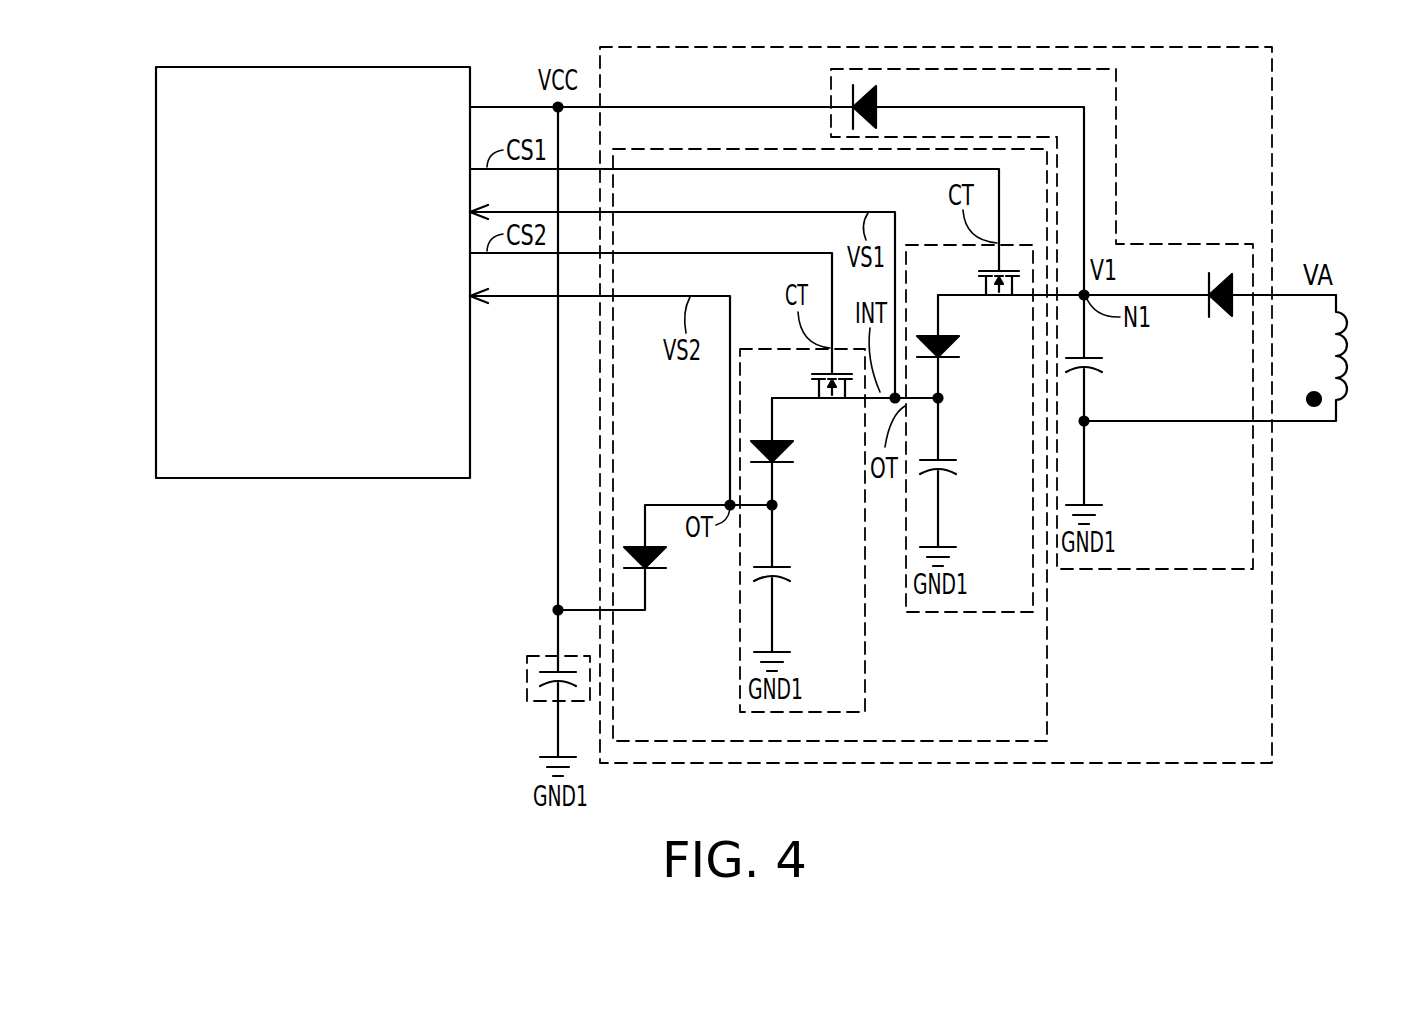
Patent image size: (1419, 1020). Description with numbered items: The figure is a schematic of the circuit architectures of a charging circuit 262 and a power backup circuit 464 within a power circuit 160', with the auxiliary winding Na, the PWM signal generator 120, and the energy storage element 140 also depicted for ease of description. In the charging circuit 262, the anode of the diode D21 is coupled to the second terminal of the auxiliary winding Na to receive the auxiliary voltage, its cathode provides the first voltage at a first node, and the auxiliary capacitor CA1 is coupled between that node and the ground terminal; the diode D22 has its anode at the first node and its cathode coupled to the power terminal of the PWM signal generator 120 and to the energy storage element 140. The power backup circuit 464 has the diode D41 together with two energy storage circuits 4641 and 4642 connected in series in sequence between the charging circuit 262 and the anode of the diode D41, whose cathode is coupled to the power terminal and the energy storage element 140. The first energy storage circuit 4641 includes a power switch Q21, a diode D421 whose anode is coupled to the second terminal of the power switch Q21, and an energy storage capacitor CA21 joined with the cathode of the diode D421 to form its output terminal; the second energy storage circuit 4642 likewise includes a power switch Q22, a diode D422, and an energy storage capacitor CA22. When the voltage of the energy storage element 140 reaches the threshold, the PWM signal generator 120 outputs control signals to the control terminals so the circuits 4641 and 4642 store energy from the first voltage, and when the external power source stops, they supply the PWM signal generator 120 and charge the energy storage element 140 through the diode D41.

The PWM signal generator 120 is at (314, 478).
The energy storage element 140 is at (526, 680).
The power circuit 160' is at (991, 442).
The charging circuit 262 is at (1155, 571).
The power backup circuit 464 is at (1047, 716).
The first energy storage circuit 4641 is at (985, 613).
The second energy storage circuit 4642 is at (865, 683).
The diode D41 is at (668, 556).
The diode D22 is at (878, 92).
The diode D21 is at (1210, 314).
The diode D421 is at (960, 342).
The diode D422 is at (794, 450).
The power switch Q21 is at (1011, 304).
The power switch Q22 is at (855, 405).
The auxiliary capacitor CA1 is at (1107, 409).
The energy storage capacitor CA21 is at (967, 482).
The energy storage capacitor CA22 is at (800, 588).
The auxiliary winding Na is at (1233, 358).